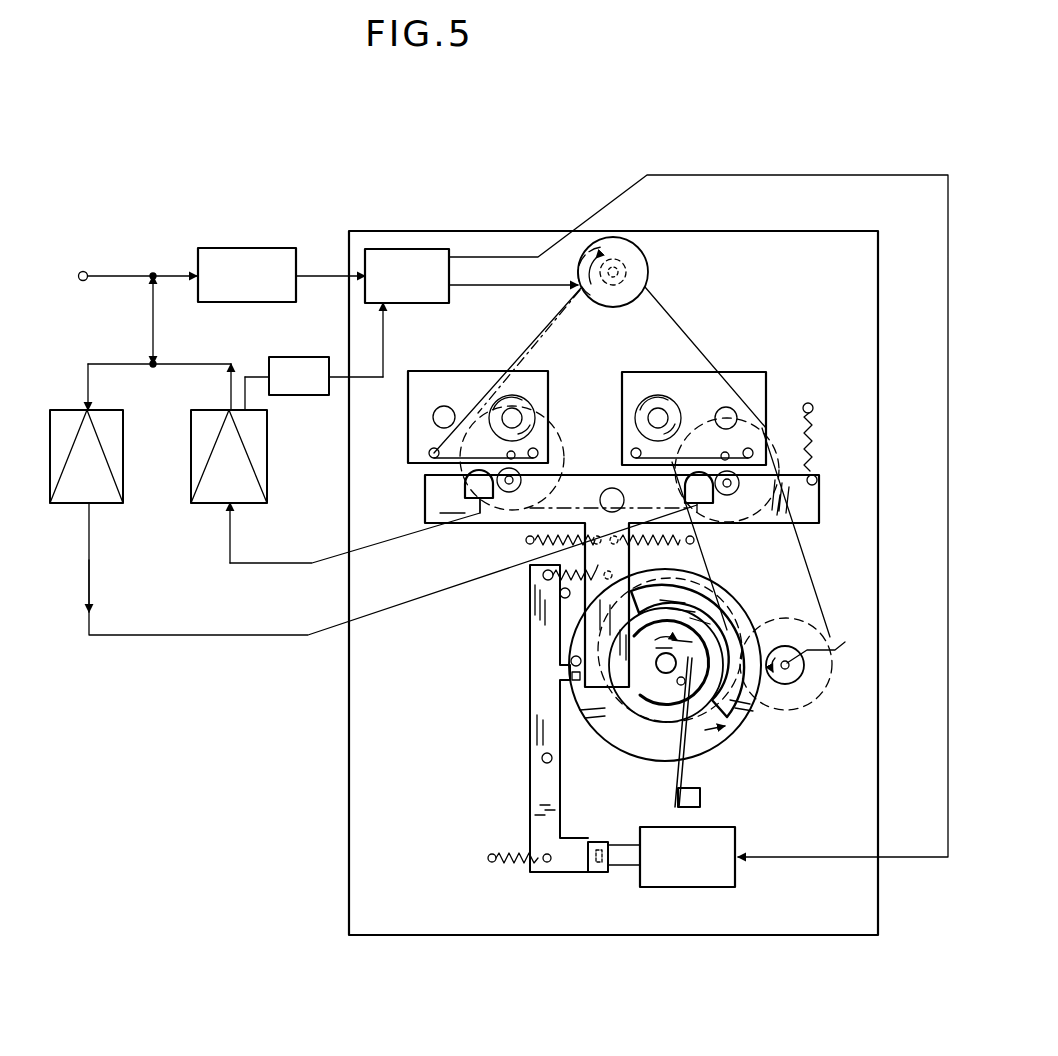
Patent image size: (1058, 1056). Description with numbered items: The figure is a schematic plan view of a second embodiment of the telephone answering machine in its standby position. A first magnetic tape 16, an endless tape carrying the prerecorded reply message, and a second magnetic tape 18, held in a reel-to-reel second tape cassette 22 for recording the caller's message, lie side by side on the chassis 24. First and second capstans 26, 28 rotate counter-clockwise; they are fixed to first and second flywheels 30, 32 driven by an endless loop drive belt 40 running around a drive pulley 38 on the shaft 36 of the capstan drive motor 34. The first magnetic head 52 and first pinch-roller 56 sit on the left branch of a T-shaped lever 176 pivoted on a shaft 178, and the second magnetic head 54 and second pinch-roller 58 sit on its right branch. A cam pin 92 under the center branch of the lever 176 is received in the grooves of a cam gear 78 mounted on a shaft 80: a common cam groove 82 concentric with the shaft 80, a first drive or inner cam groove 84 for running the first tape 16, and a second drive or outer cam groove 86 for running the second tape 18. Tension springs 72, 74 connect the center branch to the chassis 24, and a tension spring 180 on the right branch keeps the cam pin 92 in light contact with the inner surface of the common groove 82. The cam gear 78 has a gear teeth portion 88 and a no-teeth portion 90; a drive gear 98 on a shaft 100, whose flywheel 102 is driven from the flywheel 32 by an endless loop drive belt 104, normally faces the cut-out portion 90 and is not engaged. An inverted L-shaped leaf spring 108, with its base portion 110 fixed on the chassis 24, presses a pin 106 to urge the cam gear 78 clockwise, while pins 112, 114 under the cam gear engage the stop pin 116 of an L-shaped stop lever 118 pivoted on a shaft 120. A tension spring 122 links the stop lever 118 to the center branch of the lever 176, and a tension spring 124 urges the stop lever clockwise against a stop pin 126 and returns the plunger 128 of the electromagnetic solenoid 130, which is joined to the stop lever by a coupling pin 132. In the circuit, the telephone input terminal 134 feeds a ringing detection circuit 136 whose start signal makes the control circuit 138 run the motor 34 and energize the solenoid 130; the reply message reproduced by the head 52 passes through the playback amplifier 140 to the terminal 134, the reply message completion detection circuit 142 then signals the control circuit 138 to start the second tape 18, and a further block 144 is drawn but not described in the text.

The first magnetic tape 16 is at (486, 442).
The second magnetic tape 18 is at (699, 440).
The second tape cassette 22 is at (741, 374).
The chassis 24 is at (503, 242).
The first capstan 26 is at (500, 458).
The second capstan 28 is at (728, 455).
The first flywheel 30 is at (550, 414).
The second flywheel 32 is at (720, 412).
The capstan drive motor 34 is at (635, 250).
The motor shaft 36 is at (625, 272).
The drive pulley 38 is at (604, 304).
The endless loop drive belt 40 is at (681, 330).
The first magnetic head 52 is at (465, 488).
The second magnetic head 54 is at (685, 494).
The first pinch-roller 56 is at (506, 492).
The second pinch-roller 58 is at (734, 490).
The tension spring 72 is at (694, 539).
The tension spring 74 is at (532, 548).
The cam gear 78 is at (708, 740).
The shaft 80 is at (658, 671).
The common cam groove 82 is at (654, 724).
The first drive cam groove 84 is at (655, 636).
The second drive cam groove 86 is at (700, 620).
The gear teeth portion 88 is at (655, 765).
The no-teeth portion 90 is at (752, 718).
The cam pin 92 is at (598, 670).
The drive gear 98 is at (804, 668).
The shaft 100 is at (830, 642).
The flywheel 102 is at (812, 700).
The endless loop drive belt 104 is at (811, 562).
The pin 106 is at (678, 684).
The leaf spring 108 is at (682, 780).
The base portion 110 is at (702, 803).
The pin 112 is at (570, 678).
The pin 114 is at (672, 538).
The stop pin 116 is at (570, 660).
The stop lever 118 is at (530, 734).
The shaft 120 is at (542, 754).
The tension spring 122 is at (528, 592).
The tension spring 124 is at (513, 864).
The stop pin 126 is at (530, 612).
The plunger 128 is at (632, 882).
The electromagnetic solenoid 130 is at (702, 887).
The coupling pin 132 is at (588, 858).
The telephone input terminal 134 is at (88, 268).
The ringing detection circuit 136 is at (283, 248).
The control circuit 138 is at (409, 302).
The playback amplifier 140 is at (267, 451).
The reply message completion detection circuit 142 is at (316, 344).
The amplifier 144 is at (115, 507).
The T-shaped lever 176 is at (466, 493).
The shaft 178 is at (615, 488).
The tension spring 180 is at (814, 438).